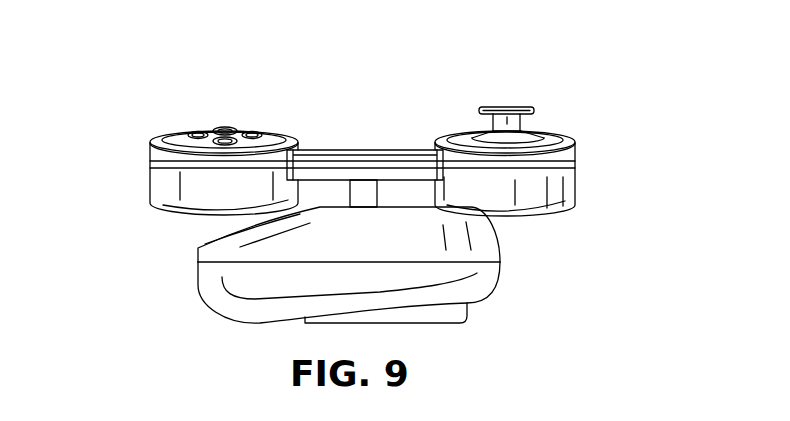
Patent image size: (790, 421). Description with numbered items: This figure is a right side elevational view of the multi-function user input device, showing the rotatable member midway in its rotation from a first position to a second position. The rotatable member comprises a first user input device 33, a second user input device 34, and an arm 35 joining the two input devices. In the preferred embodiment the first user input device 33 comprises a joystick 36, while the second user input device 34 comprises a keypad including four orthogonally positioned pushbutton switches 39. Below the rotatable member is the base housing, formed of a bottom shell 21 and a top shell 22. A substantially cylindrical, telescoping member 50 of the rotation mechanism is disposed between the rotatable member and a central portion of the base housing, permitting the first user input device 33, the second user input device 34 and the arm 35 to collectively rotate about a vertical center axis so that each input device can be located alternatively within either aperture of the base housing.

The second user input device 34 is at (145, 143).
The pushbutton switches 39 is at (223, 128).
The arm 35 is at (334, 150).
The telescoping member 50 is at (363, 190).
The joystick 36 is at (507, 108).
The first user input device 33 is at (585, 145).
The top shell 22 is at (485, 238).
The bottom shell 21 is at (477, 282).